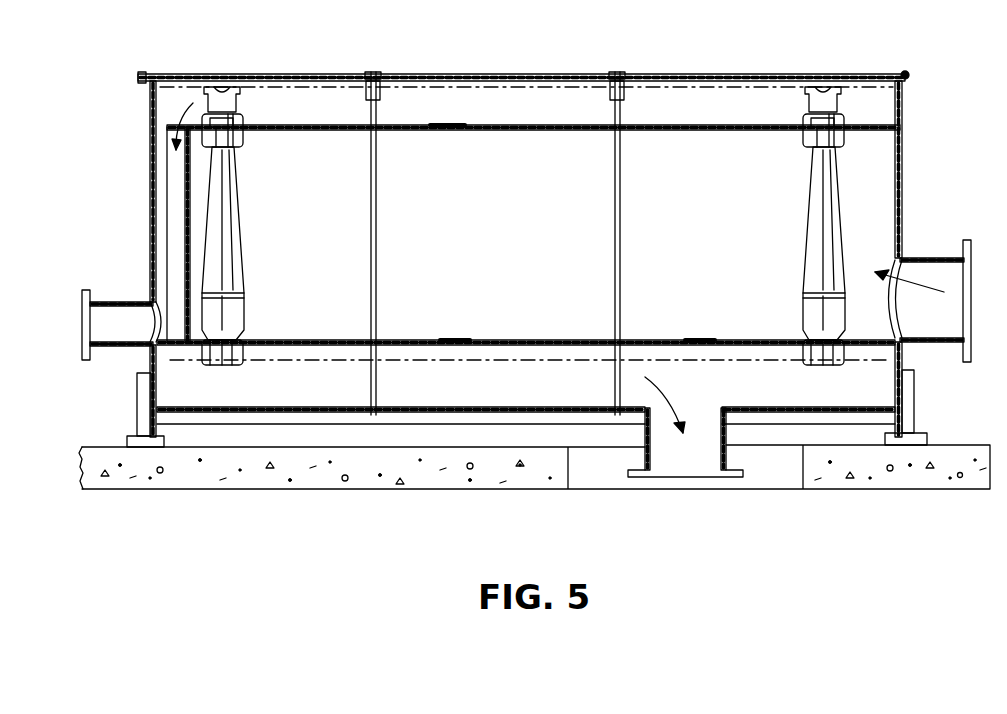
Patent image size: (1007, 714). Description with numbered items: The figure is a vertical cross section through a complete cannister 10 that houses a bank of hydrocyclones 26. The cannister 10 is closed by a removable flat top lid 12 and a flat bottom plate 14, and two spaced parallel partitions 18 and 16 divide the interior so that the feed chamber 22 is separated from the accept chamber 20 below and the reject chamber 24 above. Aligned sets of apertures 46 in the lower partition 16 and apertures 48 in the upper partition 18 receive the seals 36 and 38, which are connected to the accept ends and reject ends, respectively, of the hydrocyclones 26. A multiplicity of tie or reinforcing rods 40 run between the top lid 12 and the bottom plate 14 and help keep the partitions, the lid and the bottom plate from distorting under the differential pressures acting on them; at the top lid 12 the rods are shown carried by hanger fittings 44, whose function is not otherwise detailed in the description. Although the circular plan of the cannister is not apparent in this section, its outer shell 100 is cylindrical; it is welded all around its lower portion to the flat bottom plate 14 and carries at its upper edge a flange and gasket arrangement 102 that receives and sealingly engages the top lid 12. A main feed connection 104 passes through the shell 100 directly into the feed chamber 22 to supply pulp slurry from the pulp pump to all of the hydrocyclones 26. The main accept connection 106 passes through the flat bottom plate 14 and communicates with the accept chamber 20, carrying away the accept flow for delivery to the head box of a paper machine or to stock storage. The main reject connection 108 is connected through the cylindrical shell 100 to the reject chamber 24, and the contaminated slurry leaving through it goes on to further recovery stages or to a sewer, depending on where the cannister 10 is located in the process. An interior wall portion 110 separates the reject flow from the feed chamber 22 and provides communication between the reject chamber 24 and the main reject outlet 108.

The cannister 10 is at (300, 60).
The removable flat top lid 12 is at (708, 74).
The flat bottom plate 14 is at (468, 408).
The partition 16 is at (556, 341).
The partition 18 is at (550, 130).
The accept chamber 20 is at (776, 394).
The feed chamber 22 is at (714, 242).
The reject chamber 24 is at (562, 118).
The hydrocyclones 26 is at (226, 233).
The seals 36 is at (226, 352).
The seals 38 is at (240, 124).
The tie or reinforcing rods 40 is at (622, 300).
The hanger 44 is at (377, 72).
The apertures 46 is at (452, 342).
The apertures 48 is at (445, 130).
The outer shell 100 is at (903, 157).
The flange and gasket arrangement 102 is at (910, 76).
The main feed connection 104 is at (905, 258).
The main accept connection 106 is at (730, 457).
The main reject connection 108 is at (108, 298).
The interior wall portion 110 is at (185, 186).